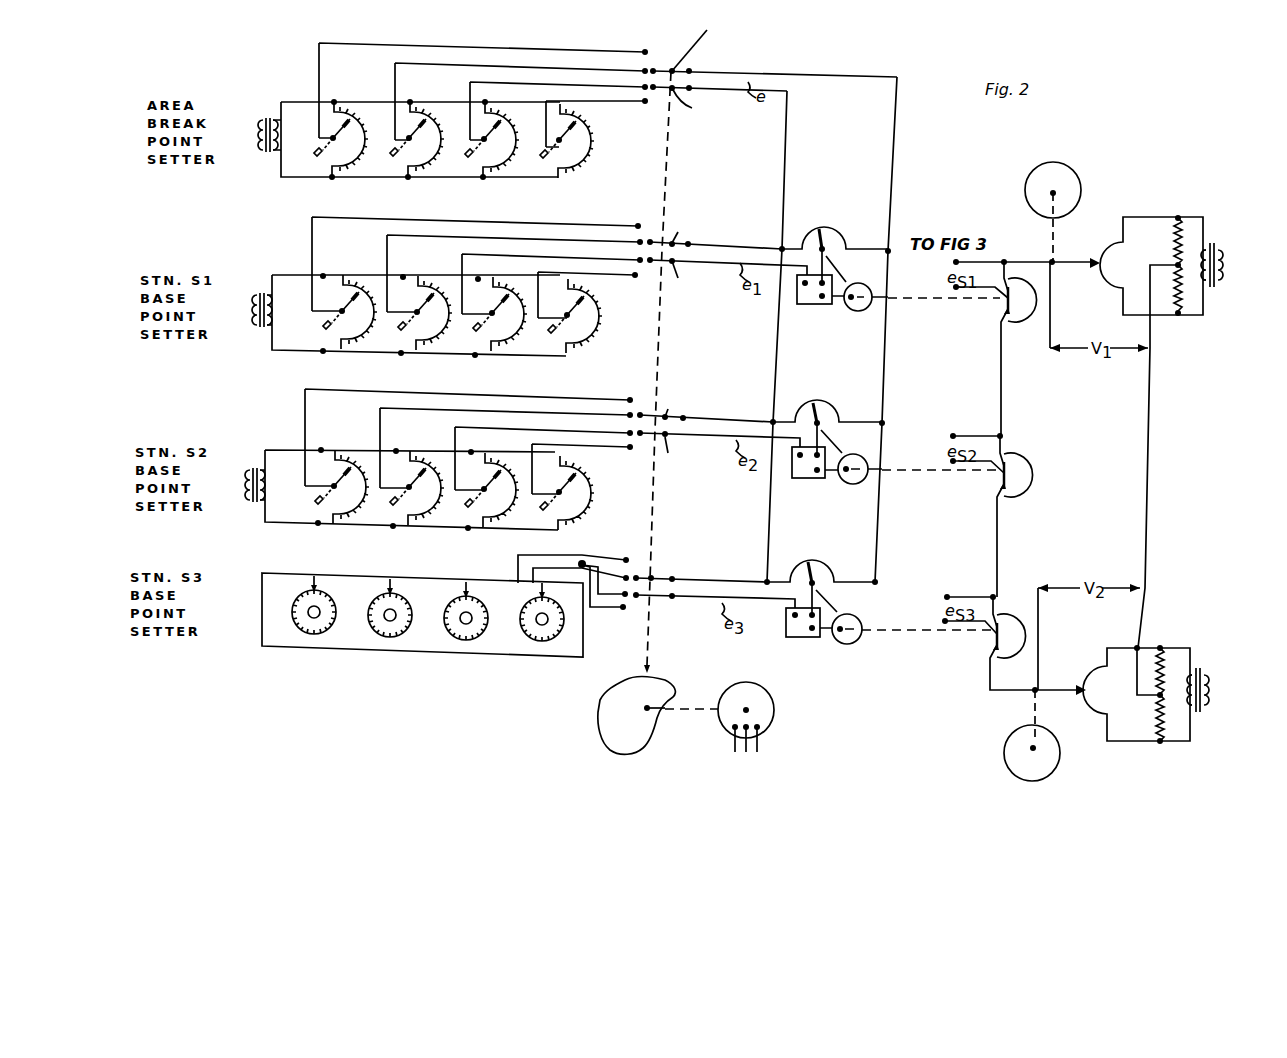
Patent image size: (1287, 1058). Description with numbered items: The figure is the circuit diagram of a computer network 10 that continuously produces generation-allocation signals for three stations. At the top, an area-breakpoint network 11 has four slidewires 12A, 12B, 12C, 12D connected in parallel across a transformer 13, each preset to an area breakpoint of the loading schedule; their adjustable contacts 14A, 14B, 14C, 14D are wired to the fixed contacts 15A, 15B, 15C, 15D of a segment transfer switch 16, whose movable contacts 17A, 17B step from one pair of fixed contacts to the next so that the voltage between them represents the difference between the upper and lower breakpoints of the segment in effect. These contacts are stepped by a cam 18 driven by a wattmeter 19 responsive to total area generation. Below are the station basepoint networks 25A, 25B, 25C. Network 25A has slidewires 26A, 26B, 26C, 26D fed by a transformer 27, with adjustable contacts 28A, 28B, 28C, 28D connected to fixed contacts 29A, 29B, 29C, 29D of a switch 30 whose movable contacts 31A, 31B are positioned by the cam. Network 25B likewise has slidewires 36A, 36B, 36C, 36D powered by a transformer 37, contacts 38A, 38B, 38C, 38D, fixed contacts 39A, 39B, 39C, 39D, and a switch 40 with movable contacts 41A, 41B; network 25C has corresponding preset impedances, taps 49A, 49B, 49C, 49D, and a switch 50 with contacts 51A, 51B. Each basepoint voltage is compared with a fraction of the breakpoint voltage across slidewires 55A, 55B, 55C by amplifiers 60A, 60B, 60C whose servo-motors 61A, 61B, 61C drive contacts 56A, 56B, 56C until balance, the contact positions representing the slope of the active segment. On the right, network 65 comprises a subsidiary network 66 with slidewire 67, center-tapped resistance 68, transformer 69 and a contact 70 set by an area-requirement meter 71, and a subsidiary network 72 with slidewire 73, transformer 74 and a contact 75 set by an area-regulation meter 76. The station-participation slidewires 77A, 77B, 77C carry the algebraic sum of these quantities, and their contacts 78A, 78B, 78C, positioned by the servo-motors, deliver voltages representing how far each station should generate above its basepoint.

The computer network 10 is at (745, 164).
The area-breakpoint network 11 is at (307, 126).
The slidewire 12A is at (352, 163).
The slidewire 12B is at (428, 163).
The slidewire 12C is at (503, 164).
The slidewire 12D is at (582, 128).
The transformer 13 is at (263, 118).
The adjustable contact 14A is at (348, 118).
The adjustable contact 14B is at (424, 118).
The adjustable contact 14C is at (499, 118).
The adjustable contact 14D is at (583, 156).
The fixed contact 15A is at (646, 50).
The fixed contact 15B is at (645, 70).
The fixed contact 15C is at (645, 88).
The fixed contact 15D is at (645, 102).
The segment transfer switch 16 is at (722, 67).
The movable contact 17A is at (703, 42).
The movable contact 17B is at (701, 105).
The cam 18 is at (638, 684).
The wattmeter 19 is at (768, 732).
The basepoint network 25A is at (306, 299).
The basepoint network 25B is at (299, 472).
The basepoint network 25C is at (299, 594).
The slidewire 26A is at (360, 335).
The slidewire 26B is at (436, 336).
The slidewire 26C is at (510, 322).
The slidewire 26D is at (583, 327).
The transformer 27 is at (256, 300).
The adjustable contact 28A is at (358, 292).
The adjustable contact 28B is at (433, 292).
The adjustable contact 28C is at (506, 345).
The adjustable contact 28D is at (585, 349).
The fixed contact 29A is at (638, 226).
The fixed contact 29B is at (640, 242).
The fixed contact 29C is at (640, 260).
The fixed contact 29D is at (635, 276).
The segment transfer switch 30 is at (726, 248).
The movable contact 31A is at (690, 229).
The movable contact 31B is at (690, 279).
The slidewire 36A is at (352, 512).
The slidewire 36B is at (428, 513).
The slidewire 36C is at (505, 514).
The slidewire 36D is at (575, 481).
The transformer 37 is at (250, 473).
The adjustable contact 38A is at (350, 466).
The adjustable contact 38B is at (425, 466).
The adjustable contact 38C is at (499, 467).
The adjustable contact 38D is at (577, 506).
The fixed contact 39A is at (630, 400).
The fixed contact 39B is at (630, 415).
The fixed contact 39C is at (630, 434).
The fixed contact 39D is at (630, 448).
The segment transfer switch 40 is at (730, 416).
The movable contact 41A is at (678, 404).
The movable contact 41B is at (678, 454).
The tap conductor 49A is at (626, 559).
The tap conductor 49B is at (640, 577).
The tap conductor 49C is at (620, 608).
The tap conductor 49D is at (627, 598).
The segment transfer switch 50 is at (720, 581).
The selector switch contact 51A is at (672, 578).
The selector switch contact 51B is at (672, 597).
The slidewire 55A is at (843, 242).
The slidewire 55B is at (832, 416).
The slidewire 55C is at (828, 578).
The slidewire contact 56A is at (817, 238).
The slidewire contact 56B is at (811, 412).
The slidewire contact 56C is at (806, 572).
The amplifier 60A is at (812, 305).
The amplifier 60B is at (803, 479).
The amplifier 60C is at (798, 637).
The servo-motor 61A is at (860, 311).
The servo-motor 61B is at (855, 484).
The servo-motor 61C is at (853, 643).
The network 65 is at (1080, 414).
The subsidiary network 66 is at (1160, 264).
The slidewire 67 is at (1103, 246).
The center-tapped resistance 68 is at (1181, 232).
The transformer 69 is at (1215, 252).
The contact 70 is at (1062, 267).
The area-requirement meter 71 is at (1083, 193).
The subsidiary network 72 is at (1128, 701).
The slidewire 73 is at (1095, 712).
The transformer 74 is at (1202, 690).
The slidewire contact 75 is at (1041, 691).
The area-regulation meter 76 is at (1004, 762).
The station-participation slidewire 77A is at (1006, 317).
The station-participation slidewire 77B is at (1020, 488).
The station-participation slidewire 77C is at (1002, 656).
The slidewire contact 78A is at (1023, 292).
The slidewire contact 78B is at (1012, 463).
The slidewire contact 78C is at (987, 626).